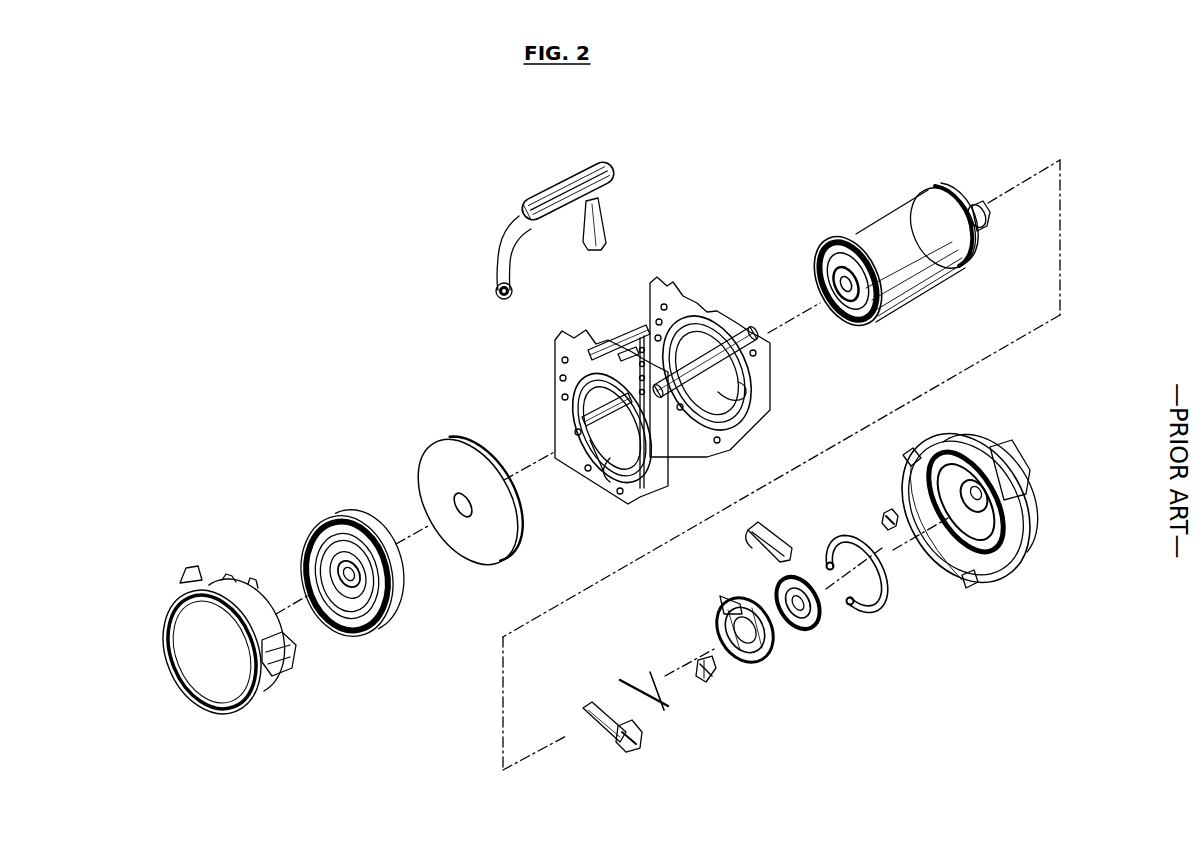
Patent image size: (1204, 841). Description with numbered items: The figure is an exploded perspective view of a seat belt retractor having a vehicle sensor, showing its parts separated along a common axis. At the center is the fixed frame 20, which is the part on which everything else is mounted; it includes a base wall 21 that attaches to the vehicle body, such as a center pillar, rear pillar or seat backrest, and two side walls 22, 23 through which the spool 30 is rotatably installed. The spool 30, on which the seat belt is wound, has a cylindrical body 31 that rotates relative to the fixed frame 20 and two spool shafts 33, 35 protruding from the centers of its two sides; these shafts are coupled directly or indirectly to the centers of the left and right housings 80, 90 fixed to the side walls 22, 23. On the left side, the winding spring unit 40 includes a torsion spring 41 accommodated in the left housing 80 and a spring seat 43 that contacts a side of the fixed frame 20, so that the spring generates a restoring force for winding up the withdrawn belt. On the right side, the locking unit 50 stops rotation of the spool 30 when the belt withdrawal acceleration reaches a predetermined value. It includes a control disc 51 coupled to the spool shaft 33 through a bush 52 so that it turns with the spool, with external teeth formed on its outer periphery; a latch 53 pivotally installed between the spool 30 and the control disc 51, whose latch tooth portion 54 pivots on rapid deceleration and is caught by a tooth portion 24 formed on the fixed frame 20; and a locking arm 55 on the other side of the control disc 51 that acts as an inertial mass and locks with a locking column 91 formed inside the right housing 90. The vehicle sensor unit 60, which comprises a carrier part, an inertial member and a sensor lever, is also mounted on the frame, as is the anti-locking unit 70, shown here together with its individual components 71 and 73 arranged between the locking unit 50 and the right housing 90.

The fixed frame 20 is at (654, 352).
The base wall 21 is at (618, 333).
The side wall 22 is at (555, 412).
The side wall 23 is at (736, 318).
The tooth portion 24 is at (770, 407).
The spool 30 is at (885, 233).
The cylindrical body 31 is at (906, 228).
The spool shaft 33 is at (983, 210).
The spool shaft 35 is at (830, 256).
The winding spring unit 40 is at (410, 508).
The torsion spring 41 is at (336, 510).
The spring seat 43 is at (424, 458).
The locking unit 50 is at (682, 663).
The control disc 51 is at (748, 664).
The bush 52 is at (730, 604).
The latch 53 is at (607, 752).
The latch tooth portion 54 is at (630, 700).
The locking arm 55 is at (768, 562).
The vehicle sensor unit 60 is at (874, 508).
The anti-locking unit 70 is at (858, 612).
The bearing 71 is at (820, 628).
The snap ring 73 is at (884, 588).
The left housing 80 is at (210, 695).
The right housing 90 is at (987, 508).
The locking column 91 is at (1024, 548).